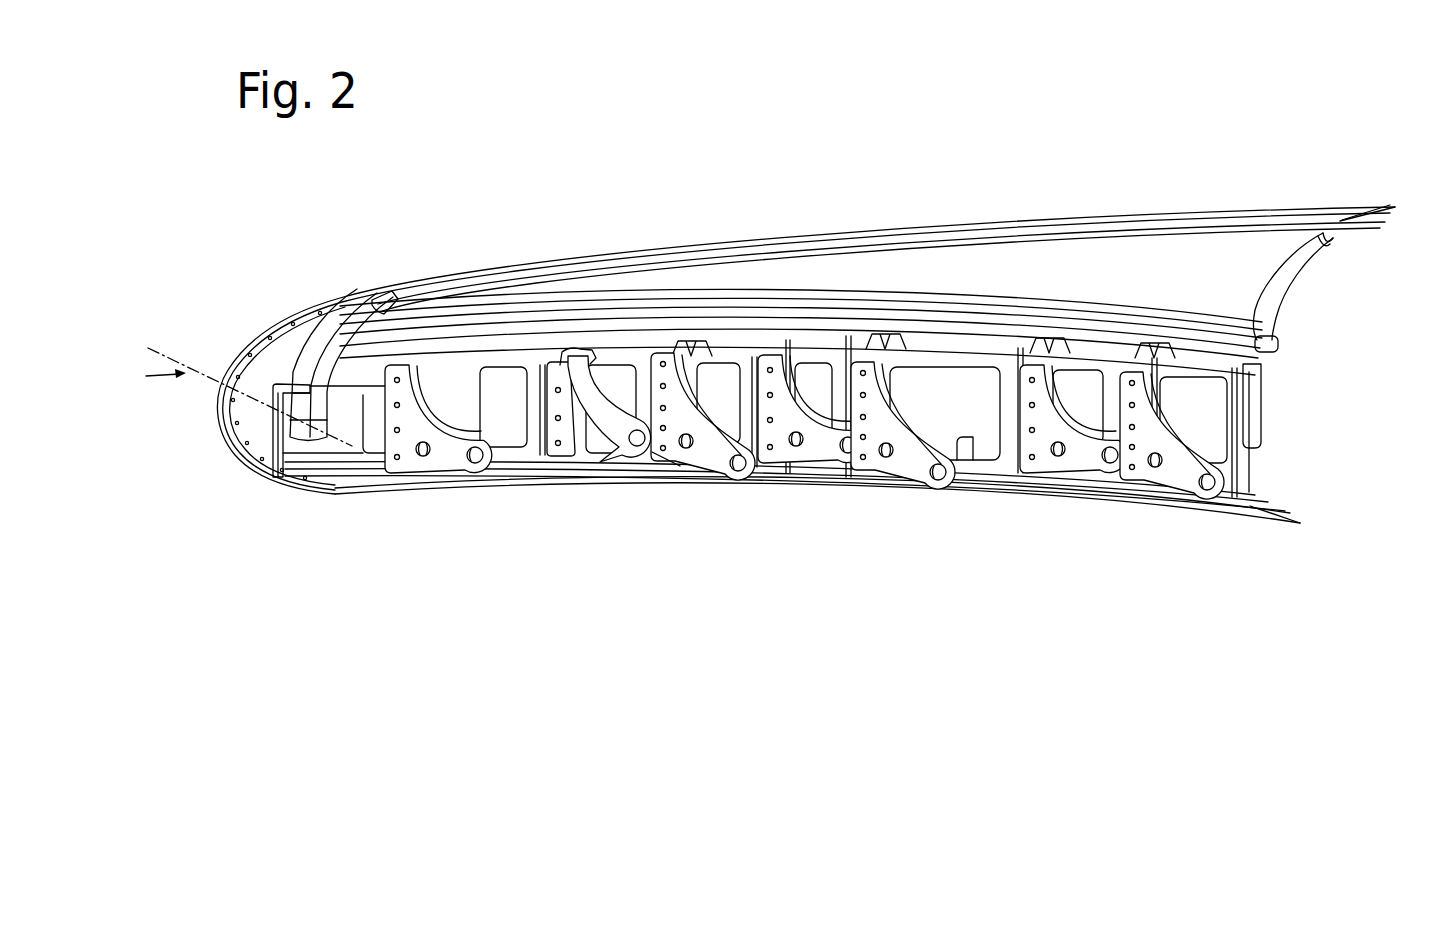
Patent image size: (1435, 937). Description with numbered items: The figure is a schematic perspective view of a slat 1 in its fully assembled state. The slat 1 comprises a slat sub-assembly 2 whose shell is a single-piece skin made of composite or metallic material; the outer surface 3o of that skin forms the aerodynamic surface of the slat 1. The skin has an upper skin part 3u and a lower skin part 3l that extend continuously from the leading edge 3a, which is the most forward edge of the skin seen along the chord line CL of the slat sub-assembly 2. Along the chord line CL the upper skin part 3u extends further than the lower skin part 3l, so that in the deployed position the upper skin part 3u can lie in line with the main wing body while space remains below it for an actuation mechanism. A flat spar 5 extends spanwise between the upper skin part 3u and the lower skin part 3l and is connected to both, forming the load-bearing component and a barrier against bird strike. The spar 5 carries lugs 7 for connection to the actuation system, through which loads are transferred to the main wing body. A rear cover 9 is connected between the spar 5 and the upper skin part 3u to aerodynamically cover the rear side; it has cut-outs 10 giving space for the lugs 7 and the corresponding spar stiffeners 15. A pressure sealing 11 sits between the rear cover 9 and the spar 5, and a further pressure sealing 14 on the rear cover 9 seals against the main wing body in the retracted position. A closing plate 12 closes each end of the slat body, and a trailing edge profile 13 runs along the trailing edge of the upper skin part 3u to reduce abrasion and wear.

The slat 1 is at (235, 333).
The slat sub-assembly 2 is at (156, 376).
The outer surface 3o is at (277, 315).
The upper skin part 3u is at (342, 300).
The leading edge 3a is at (222, 385).
The lower skin part 3l is at (265, 478).
The spar 5 is at (1207, 410).
The lugs 7 is at (440, 453).
The rear cover 9 is at (1230, 271).
The cut-outs 10 is at (670, 353).
The pressure sealing 11 is at (367, 317).
The closing plate 12 is at (262, 430).
The trailing edge profile 13 is at (1343, 220).
The pressure sealing 14 is at (1270, 349).
The spar stiffeners 15 is at (1253, 382).
The chord line CL is at (165, 356).